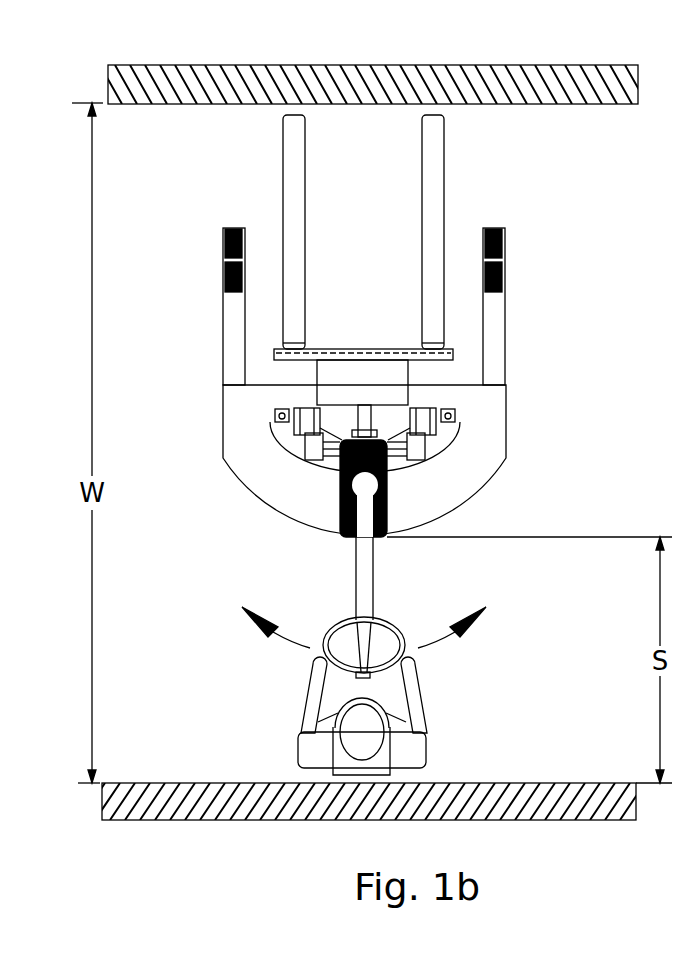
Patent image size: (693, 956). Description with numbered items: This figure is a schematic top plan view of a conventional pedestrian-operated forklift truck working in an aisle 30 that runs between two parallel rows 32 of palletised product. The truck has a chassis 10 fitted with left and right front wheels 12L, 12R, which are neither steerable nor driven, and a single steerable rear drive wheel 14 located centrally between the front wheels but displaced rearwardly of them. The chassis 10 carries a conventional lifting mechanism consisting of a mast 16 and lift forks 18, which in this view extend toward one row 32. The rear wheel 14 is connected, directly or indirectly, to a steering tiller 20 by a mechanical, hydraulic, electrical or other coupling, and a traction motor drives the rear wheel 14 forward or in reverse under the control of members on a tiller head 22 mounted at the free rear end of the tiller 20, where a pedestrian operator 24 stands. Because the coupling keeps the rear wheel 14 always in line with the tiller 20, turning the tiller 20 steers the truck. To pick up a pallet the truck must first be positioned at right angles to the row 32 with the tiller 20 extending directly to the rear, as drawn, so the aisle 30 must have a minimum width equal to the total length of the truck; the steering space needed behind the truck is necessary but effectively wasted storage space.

The chassis 10 is at (243, 413).
The left front wheel 12L is at (223, 242).
The right front wheel 12R is at (507, 243).
The steerable rear drive wheel 14 is at (388, 488).
The mast 16 is at (340, 360).
The lift forks 18 is at (432, 219).
The steering tiller 20 is at (373, 592).
The tiller head 22 is at (337, 622).
The pedestrian operator 24 is at (425, 750).
The aisle 30 is at (578, 347).
The rows of palletised product 32 is at (590, 104).